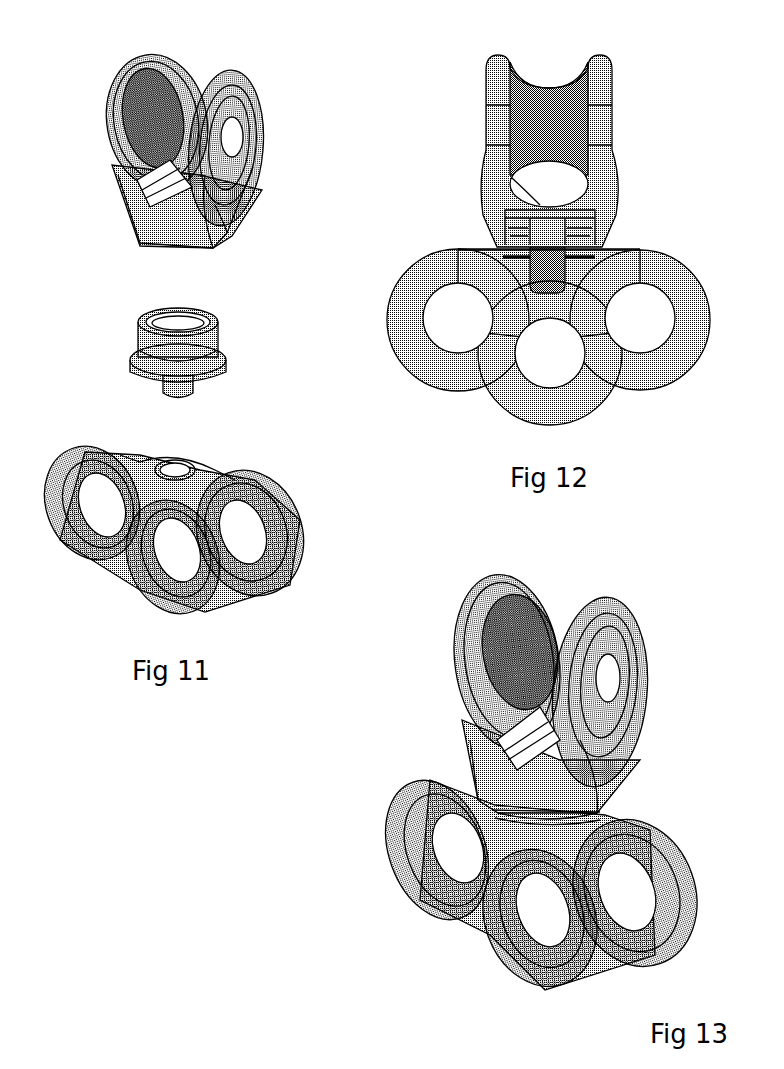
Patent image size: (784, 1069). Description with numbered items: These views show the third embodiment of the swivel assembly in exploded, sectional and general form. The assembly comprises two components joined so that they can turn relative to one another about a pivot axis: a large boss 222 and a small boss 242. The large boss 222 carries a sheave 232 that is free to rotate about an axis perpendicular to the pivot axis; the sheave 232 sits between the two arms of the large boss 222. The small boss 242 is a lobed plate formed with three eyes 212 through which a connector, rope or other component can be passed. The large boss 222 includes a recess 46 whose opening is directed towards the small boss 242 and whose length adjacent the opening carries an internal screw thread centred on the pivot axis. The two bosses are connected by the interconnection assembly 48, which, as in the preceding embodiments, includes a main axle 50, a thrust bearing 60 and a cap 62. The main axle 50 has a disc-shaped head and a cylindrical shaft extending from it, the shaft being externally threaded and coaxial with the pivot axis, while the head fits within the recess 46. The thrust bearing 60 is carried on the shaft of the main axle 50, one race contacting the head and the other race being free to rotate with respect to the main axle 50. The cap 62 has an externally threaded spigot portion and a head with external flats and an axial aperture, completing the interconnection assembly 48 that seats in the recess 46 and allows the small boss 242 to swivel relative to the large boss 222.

In FIG. 11, the large boss 222 is at (223, 141).
In FIG. 12, the large boss 222 is at (558, 136).
In FIG. 13, the large boss 222 is at (587, 674).
In FIG. 11, the sheave 232 is at (187, 92).
In FIG. 12, the sheave 232 is at (552, 88).
In FIG. 13, the sheave 232 is at (562, 623).
In FIG. 11, the small boss 242 is at (338, 558).
In FIG. 12, the small boss 242 is at (694, 398).
In FIG. 13, the small boss 242 is at (490, 892).
In FIG. 13, the eyes 212 is at (513, 982).
In FIG. 12, the recess 46 is at (482, 175).
In FIG. 11, the interconnection assembly 48 is at (184, 331).
In FIG. 11, the thrust bearing 60 is at (137, 333).
In FIG. 11, the cap 62 is at (223, 353).
In FIG. 11, the main axle 50 is at (193, 393).